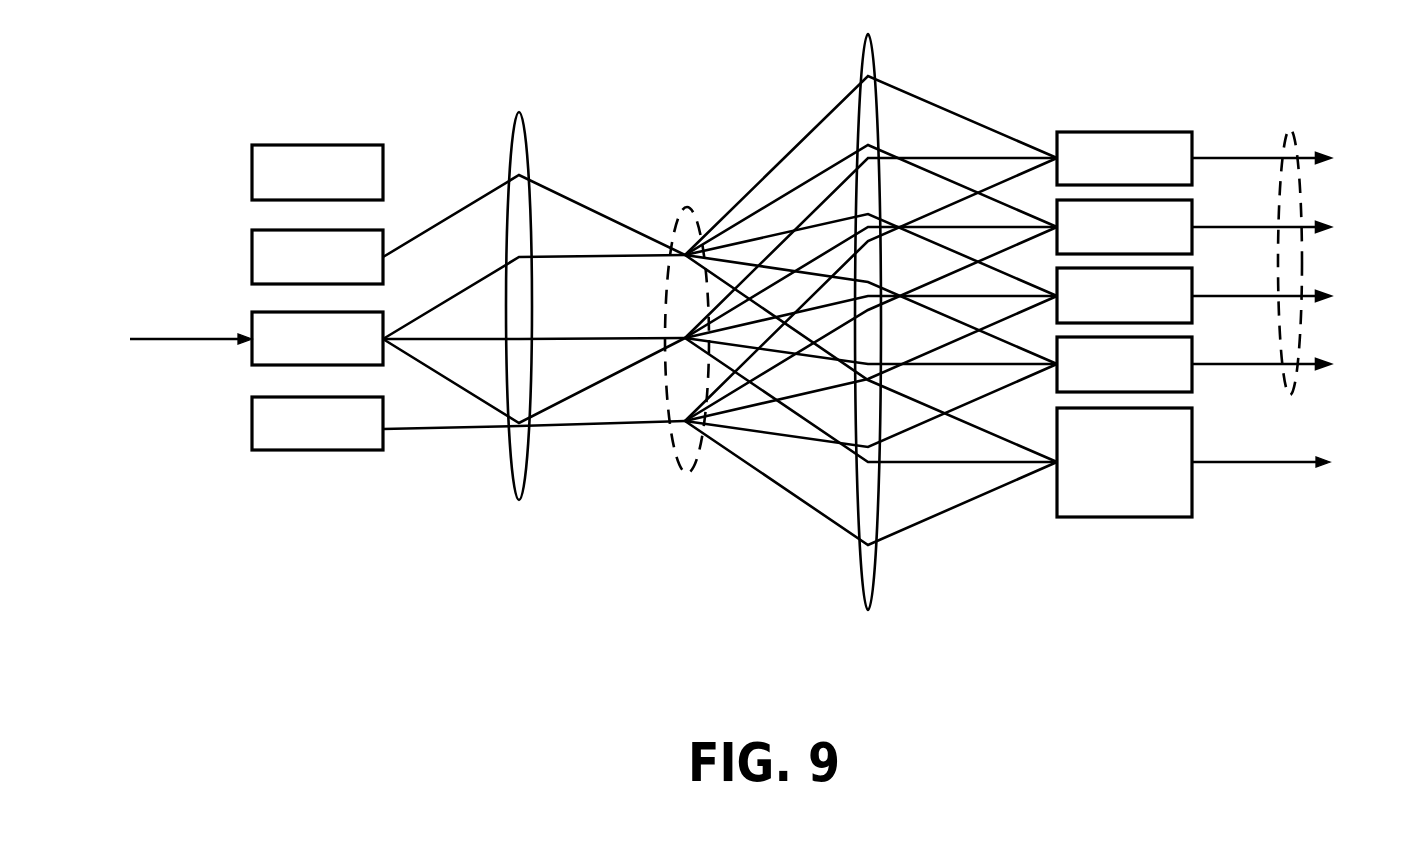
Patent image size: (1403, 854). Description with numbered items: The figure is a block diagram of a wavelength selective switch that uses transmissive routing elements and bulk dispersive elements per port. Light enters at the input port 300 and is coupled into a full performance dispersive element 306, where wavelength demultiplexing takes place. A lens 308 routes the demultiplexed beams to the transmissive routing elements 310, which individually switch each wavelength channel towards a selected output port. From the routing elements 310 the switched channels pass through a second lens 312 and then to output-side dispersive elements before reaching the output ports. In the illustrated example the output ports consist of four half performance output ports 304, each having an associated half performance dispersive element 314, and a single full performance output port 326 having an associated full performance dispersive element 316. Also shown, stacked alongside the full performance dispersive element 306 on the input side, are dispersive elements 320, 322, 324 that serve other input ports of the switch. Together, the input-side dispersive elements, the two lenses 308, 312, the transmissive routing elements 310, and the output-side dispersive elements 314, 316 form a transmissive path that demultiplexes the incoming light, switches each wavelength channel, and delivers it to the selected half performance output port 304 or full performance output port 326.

The input port 300 is at (197, 338).
The half performance output port 304 is at (1292, 128).
The full performance dispersive element 306 is at (252, 355).
The lens 308 is at (512, 118).
The transmissive routing elements 310 is at (680, 215).
The lens 312 is at (862, 40).
The half performance dispersive elements 314 is at (1183, 148).
The full performance dispersive element 316 is at (1183, 425).
The dispersive element 320 is at (252, 165).
The dispersive element 322 is at (252, 245).
The dispersive element 324 is at (252, 424).
The full performance output port 326 is at (1287, 464).